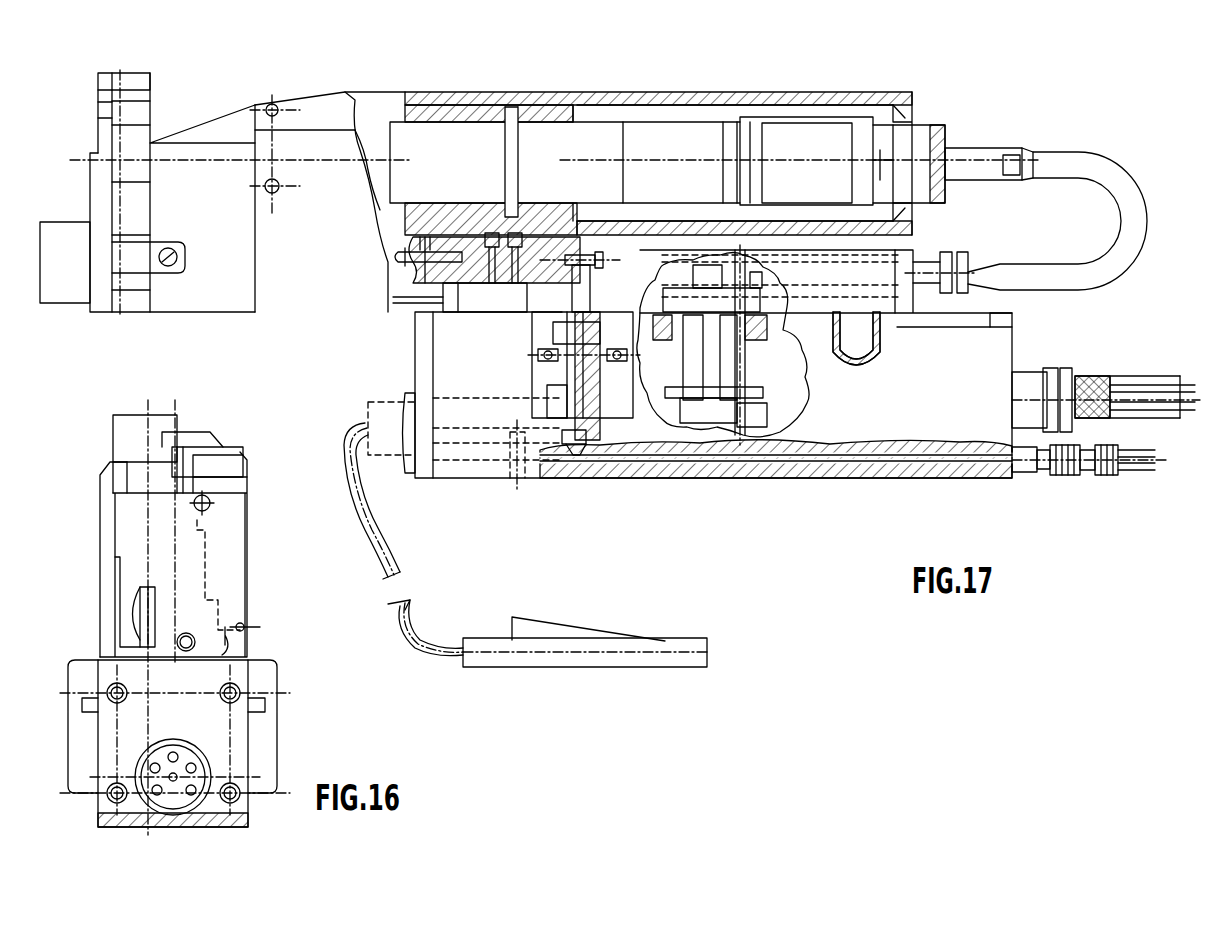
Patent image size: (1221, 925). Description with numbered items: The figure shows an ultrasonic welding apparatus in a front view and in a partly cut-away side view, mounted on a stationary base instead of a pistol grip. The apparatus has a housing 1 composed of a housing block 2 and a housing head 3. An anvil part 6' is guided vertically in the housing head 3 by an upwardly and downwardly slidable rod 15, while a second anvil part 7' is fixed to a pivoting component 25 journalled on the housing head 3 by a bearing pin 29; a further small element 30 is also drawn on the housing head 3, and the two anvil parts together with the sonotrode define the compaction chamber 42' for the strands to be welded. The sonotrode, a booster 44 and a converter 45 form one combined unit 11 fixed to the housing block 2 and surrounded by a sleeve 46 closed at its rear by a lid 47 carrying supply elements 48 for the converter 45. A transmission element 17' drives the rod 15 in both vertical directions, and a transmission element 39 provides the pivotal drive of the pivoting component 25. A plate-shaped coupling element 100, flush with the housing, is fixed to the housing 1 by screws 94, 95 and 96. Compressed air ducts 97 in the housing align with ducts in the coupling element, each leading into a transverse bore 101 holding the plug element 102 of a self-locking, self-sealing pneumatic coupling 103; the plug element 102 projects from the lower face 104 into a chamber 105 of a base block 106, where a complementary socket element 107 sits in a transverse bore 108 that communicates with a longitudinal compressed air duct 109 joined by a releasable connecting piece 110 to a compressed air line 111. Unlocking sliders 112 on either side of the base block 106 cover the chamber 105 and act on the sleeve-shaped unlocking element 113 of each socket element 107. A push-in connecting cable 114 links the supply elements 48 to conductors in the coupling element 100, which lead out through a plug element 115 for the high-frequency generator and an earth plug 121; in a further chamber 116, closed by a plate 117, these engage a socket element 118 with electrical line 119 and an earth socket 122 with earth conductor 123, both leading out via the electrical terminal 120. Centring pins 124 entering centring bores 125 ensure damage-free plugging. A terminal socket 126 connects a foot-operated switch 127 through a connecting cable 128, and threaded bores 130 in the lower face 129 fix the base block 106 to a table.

In FIG. 17, the housing 1 is at (276, 312).
In FIG. 16, the housing 1 is at (214, 434).
In FIG. 17, the housing block 2 is at (355, 302).
In FIG. 16, the housing block 2 is at (100, 490).
In FIG. 17, the housing head 3 is at (182, 298).
In FIG. 16, the housing head 3 is at (238, 552).
In FIG. 16, the anvil part 6' is at (145, 412).
In FIG. 16, the anvil part 7' is at (244, 445).
In FIG. 17, the combined unit 11 is at (608, 121).
In FIG. 16, the rod 15 is at (122, 468).
In FIG. 16, the transmission element 17' is at (101, 602).
In FIG. 17, the pivoting component 25 is at (152, 183).
In FIG. 16, the pivoting component 25 is at (245, 487).
In FIG. 16, the bearing pin 29 is at (208, 508).
In FIG. 16, the pin 30 is at (244, 625).
In FIG. 16, the transmission element 39 is at (222, 642).
In FIG. 16, the compaction chamber 42' is at (192, 404).
In FIG. 17, the booster 44 is at (435, 154).
In FIG. 17, the converter 45 is at (659, 154).
In FIG. 17, the sleeve 46 is at (704, 92).
In FIG. 17, the lid 47 is at (940, 137).
In FIG. 17, the supply elements 48 is at (1008, 142).
In FIG. 17, the screw 94 is at (450, 306).
In FIG. 17, the screw 95 is at (491, 233).
In FIG. 17, the screw 96 is at (518, 233).
In FIG. 17, the compressed air duct 97 is at (402, 250).
In FIG. 17, the coupling element 100 is at (915, 305).
In FIG. 17, the transverse bore 101 is at (605, 263).
In FIG. 17, the plug element 102 is at (548, 322).
In FIG. 17, the pneumatic coupling 103 is at (558, 330).
In FIG. 17, the lower free face 104 is at (925, 330).
In FIG. 17, the chamber 105 is at (540, 372).
In FIG. 17, the base block 106 is at (1012, 340).
In FIG. 17, the socket element 107 is at (555, 395).
In FIG. 17, the transverse bore 108 is at (575, 445).
In FIG. 17, the compressed air duct 109 is at (832, 470).
In FIG. 17, the connecting piece 110 is at (1060, 470).
In FIG. 17, the compressed air line 111 is at (1137, 470).
In FIG. 16, the unlocking slider 112 is at (268, 727).
In FIG. 17, the unlocking element 113 is at (600, 296).
In FIG. 17, the connecting cable 114 is at (1142, 216).
In FIG. 17, the plug element 115 is at (770, 342).
In FIG. 17, the chamber 116 is at (700, 410).
In FIG. 17, the plate 117 is at (1010, 318).
In FIG. 17, the socket element 118 is at (760, 365).
In FIG. 17, the electrical line 119 is at (795, 430).
In FIG. 17, the electrical terminal 120 is at (1082, 370).
In FIG. 17, the earth plug 121 is at (660, 425).
In FIG. 17, the earth socket 122 is at (728, 425).
In FIG. 17, the earth conductor 123 is at (762, 405).
In FIG. 17, the centring pin 124 is at (872, 360).
In FIG. 17, the centring bore 125 is at (878, 332).
In FIG. 17, the electrical terminal socket 126 is at (405, 466).
In FIG. 16, the electrical terminal socket 126 is at (178, 742).
In FIG. 17, the foot-operated switch 127 is at (680, 645).
In FIG. 17, the connecting cable 128 is at (388, 552).
In FIG. 17, the lower face 129 is at (466, 478).
In FIG. 17, the threaded bore 130 is at (517, 478).